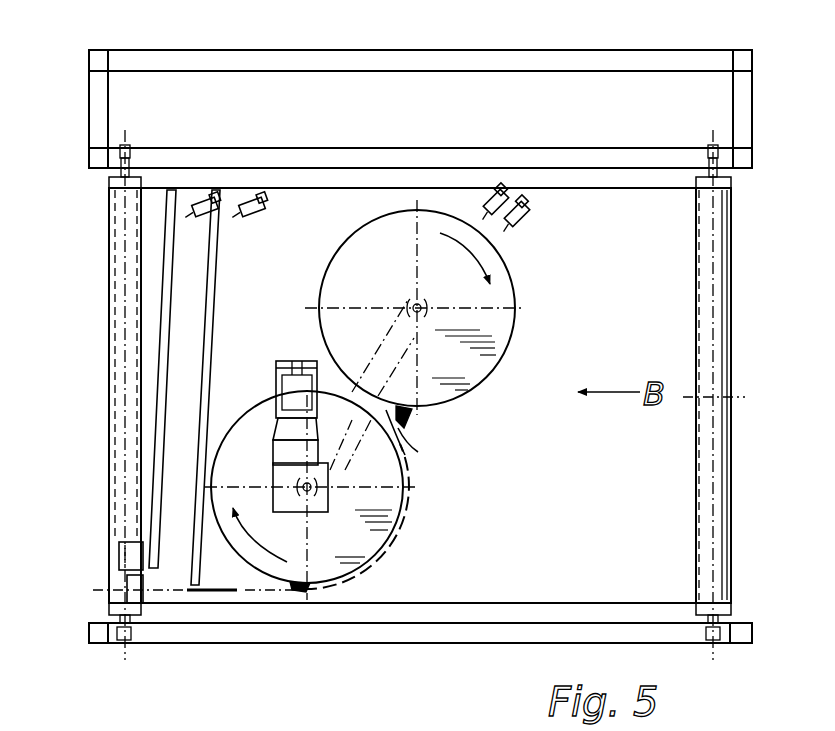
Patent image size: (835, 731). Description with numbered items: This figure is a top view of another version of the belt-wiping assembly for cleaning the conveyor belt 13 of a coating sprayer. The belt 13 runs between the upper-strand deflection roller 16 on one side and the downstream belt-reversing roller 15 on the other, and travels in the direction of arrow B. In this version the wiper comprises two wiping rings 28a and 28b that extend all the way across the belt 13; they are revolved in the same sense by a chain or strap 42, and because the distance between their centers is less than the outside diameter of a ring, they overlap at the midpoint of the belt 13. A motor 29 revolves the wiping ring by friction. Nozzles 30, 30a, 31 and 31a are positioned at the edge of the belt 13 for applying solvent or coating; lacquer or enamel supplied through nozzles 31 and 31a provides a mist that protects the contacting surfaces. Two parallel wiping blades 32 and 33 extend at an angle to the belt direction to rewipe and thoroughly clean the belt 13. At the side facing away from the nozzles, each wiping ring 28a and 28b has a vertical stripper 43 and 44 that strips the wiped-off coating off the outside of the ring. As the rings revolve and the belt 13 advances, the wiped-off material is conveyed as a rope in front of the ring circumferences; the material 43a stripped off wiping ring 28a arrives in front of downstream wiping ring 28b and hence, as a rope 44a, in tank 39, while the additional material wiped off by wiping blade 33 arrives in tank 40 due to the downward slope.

The belt 13 is at (655, 187).
The downstream belt-reversing roller 15 is at (115, 322).
The upper-strand deflection roller 16 is at (723, 288).
The wiping ring 28a is at (516, 283).
The wiping ring 28b is at (389, 556).
The motor 29 is at (286, 360).
The nozzle 30 is at (490, 192).
The nozzle 30a is at (206, 200).
The nozzle 31 is at (514, 203).
The nozzle 31a is at (256, 198).
The wiping blade 32 is at (208, 290).
The wiping blade 33 is at (168, 258).
The tank 39 is at (126, 595).
The tank 40 is at (128, 553).
The chain or strap 42 is at (398, 457).
The vertical stripper 43 is at (410, 422).
The stripped material 43a is at (398, 432).
The vertical stripper 44 is at (292, 587).
The rope 44a is at (218, 592).